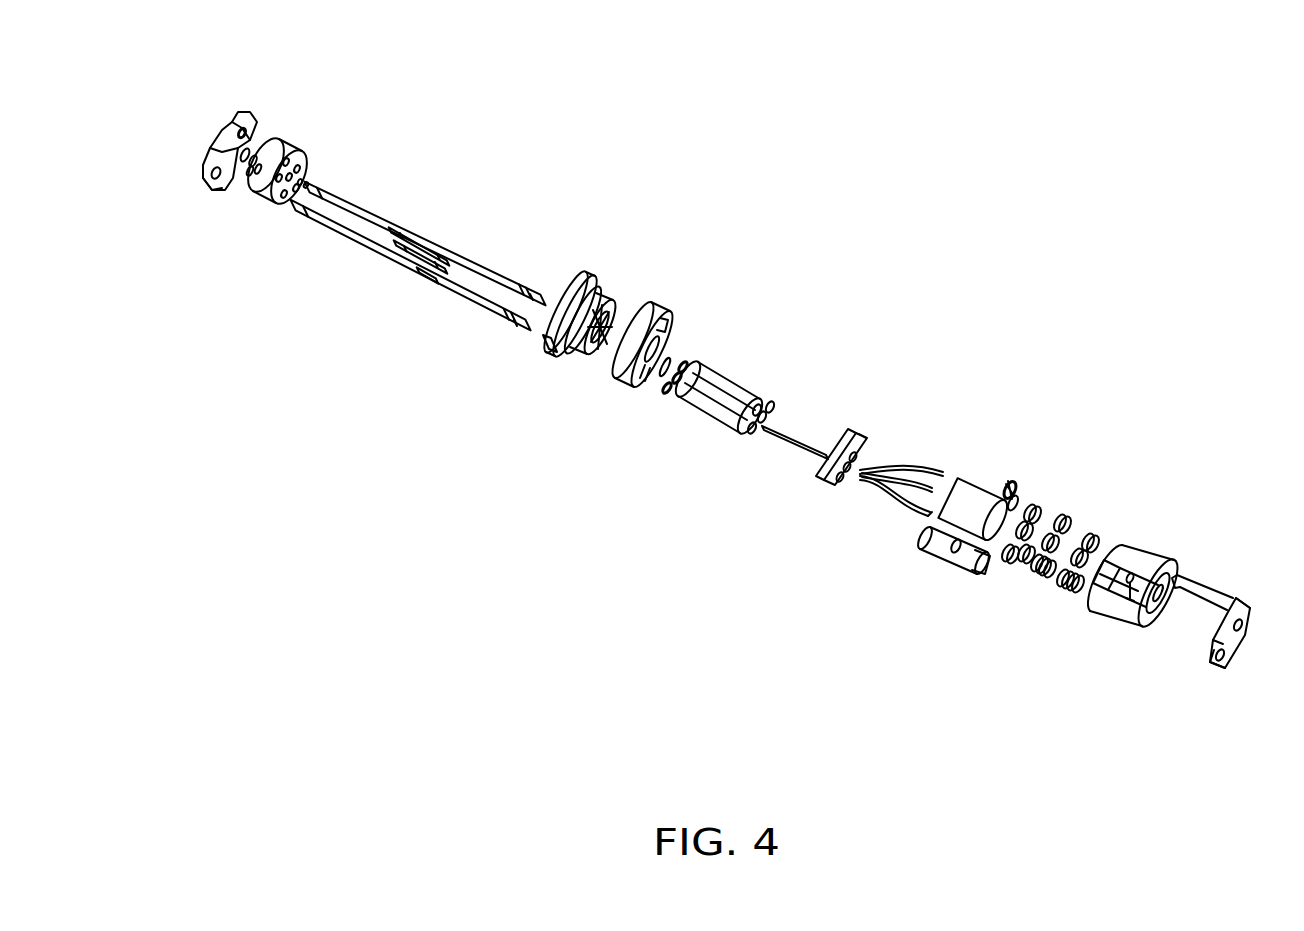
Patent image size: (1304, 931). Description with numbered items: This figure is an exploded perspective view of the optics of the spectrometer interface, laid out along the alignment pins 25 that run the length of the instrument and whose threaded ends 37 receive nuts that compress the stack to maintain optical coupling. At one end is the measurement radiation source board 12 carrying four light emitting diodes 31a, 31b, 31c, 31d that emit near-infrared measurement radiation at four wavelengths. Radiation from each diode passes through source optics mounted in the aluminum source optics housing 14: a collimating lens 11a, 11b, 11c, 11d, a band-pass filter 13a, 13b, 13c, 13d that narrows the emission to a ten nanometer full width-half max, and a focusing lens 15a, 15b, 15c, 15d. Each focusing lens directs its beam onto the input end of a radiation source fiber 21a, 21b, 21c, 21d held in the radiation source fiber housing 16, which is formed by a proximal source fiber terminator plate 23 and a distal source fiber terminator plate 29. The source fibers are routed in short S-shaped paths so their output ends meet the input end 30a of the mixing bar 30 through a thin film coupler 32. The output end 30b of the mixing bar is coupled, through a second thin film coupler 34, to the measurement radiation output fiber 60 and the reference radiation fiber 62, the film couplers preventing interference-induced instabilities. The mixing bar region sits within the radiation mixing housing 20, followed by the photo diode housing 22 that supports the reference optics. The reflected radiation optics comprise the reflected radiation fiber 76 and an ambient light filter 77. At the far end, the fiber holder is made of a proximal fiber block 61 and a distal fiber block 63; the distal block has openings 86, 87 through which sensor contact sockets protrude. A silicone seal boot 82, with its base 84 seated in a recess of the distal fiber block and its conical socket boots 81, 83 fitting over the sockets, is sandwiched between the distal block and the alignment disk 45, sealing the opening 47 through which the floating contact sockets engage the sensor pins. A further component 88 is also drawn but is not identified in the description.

The collimating lens 11a is at (1066, 590).
The collimating lens 11b is at (1089, 535).
The collimating lens 11c is at (1088, 550).
The collimating lens 11d is at (1078, 594).
The measurement radiation source board 12 is at (1244, 607).
The band-pass filter 13a is at (1036, 572).
The band-pass filter 13b is at (1052, 533).
The band-pass filter 13c is at (1063, 516).
The band-pass filter 13d is at (1046, 578).
The source optics housing 14 is at (1162, 562).
The focusing lens 15a is at (1008, 562).
The focusing lens 15b is at (1023, 521).
The focusing lens 15c is at (1032, 505).
The focusing lens 15d is at (1024, 562).
The radiation source fiber housing 16 is at (977, 483).
The radiation mixing housing 20 is at (700, 418).
The radiation source fiber 21a is at (910, 512).
The radiation source fiber 21b is at (917, 473).
The radiation source fiber 21c is at (930, 470).
The radiation source fiber 21d is at (922, 520).
The photo diode housing 22 is at (648, 303).
The proximal source fiber terminator plate 23 is at (1010, 486).
The alignment pins 25 is at (367, 212).
The distal source fiber terminator plate 29 is at (863, 436).
The mixing bar 30 is at (800, 449).
The input end of mixing bar 30a is at (852, 432).
The output end of mixing bar 30b is at (758, 434).
The light emitting diode 31a is at (1214, 660).
The light emitting diode 31b is at (1235, 612).
The light emitting diode 31c is at (1220, 617).
The light emitting diode 31d is at (1216, 647).
The thin film coupler 32 is at (772, 403).
The thin film coupler 34 is at (688, 360).
The threaded ends 37 is at (540, 287).
The alignment disk 45 is at (213, 172).
The opening 47 is at (227, 128).
The measurement radiation output fiber 60 is at (405, 238).
The proximal fiber block 61 is at (596, 282).
The reference radiation fiber 62 is at (426, 232).
The distal fiber block 63 is at (296, 148).
The reflected radiation fiber 76 is at (410, 264).
The ambient light filter 77 is at (661, 377).
The socket boot 81 is at (243, 176).
The seal boot 82 is at (256, 157).
The socket boot 83 is at (246, 150).
The base 84 is at (255, 172).
The opening 86 is at (306, 184).
The opening 87 is at (298, 182).
The pinion gear 88 is at (1010, 496).